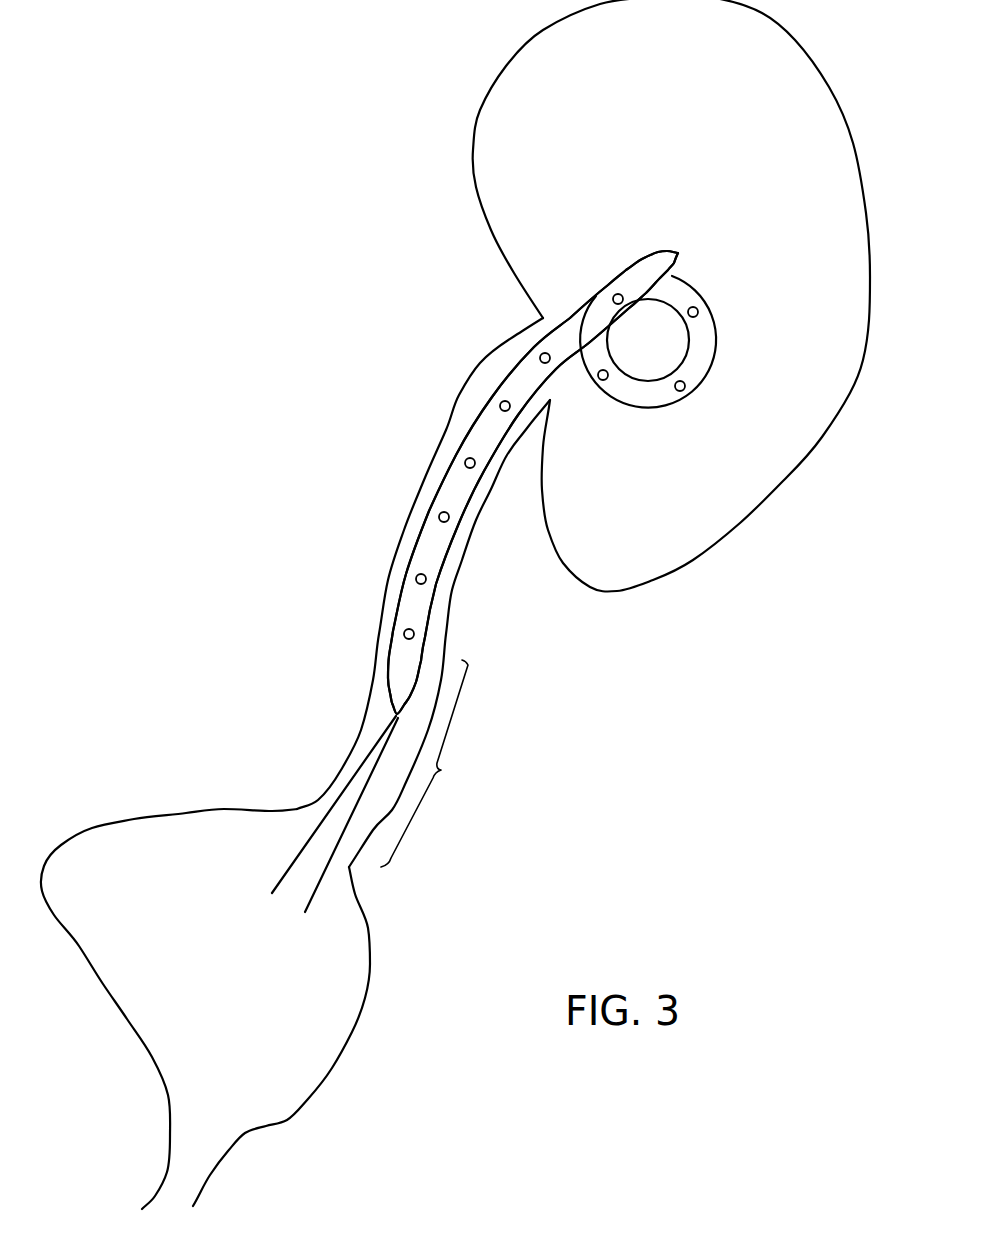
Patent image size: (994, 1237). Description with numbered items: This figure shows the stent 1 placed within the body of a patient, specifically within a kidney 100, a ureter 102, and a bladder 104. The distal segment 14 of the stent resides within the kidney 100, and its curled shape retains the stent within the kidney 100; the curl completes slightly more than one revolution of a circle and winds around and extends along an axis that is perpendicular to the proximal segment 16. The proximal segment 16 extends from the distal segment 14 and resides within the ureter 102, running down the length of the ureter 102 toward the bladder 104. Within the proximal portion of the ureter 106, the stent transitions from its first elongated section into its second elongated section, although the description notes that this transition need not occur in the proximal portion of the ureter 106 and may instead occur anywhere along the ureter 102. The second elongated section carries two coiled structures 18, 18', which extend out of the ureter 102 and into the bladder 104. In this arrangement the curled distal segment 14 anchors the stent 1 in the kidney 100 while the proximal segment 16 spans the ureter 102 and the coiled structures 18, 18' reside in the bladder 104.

The stent 1 is at (285, 474).
The distal segment 14 is at (716, 337).
The proximal segment 16 is at (468, 435).
The coiled structure 18 is at (351, 828).
The coiled structure 18' is at (323, 804).
The kidney 100 is at (743, 527).
The ureter 102 is at (447, 638).
The bladder 104 is at (361, 1019).
The proximal portion of the ureter 106 is at (432, 763).